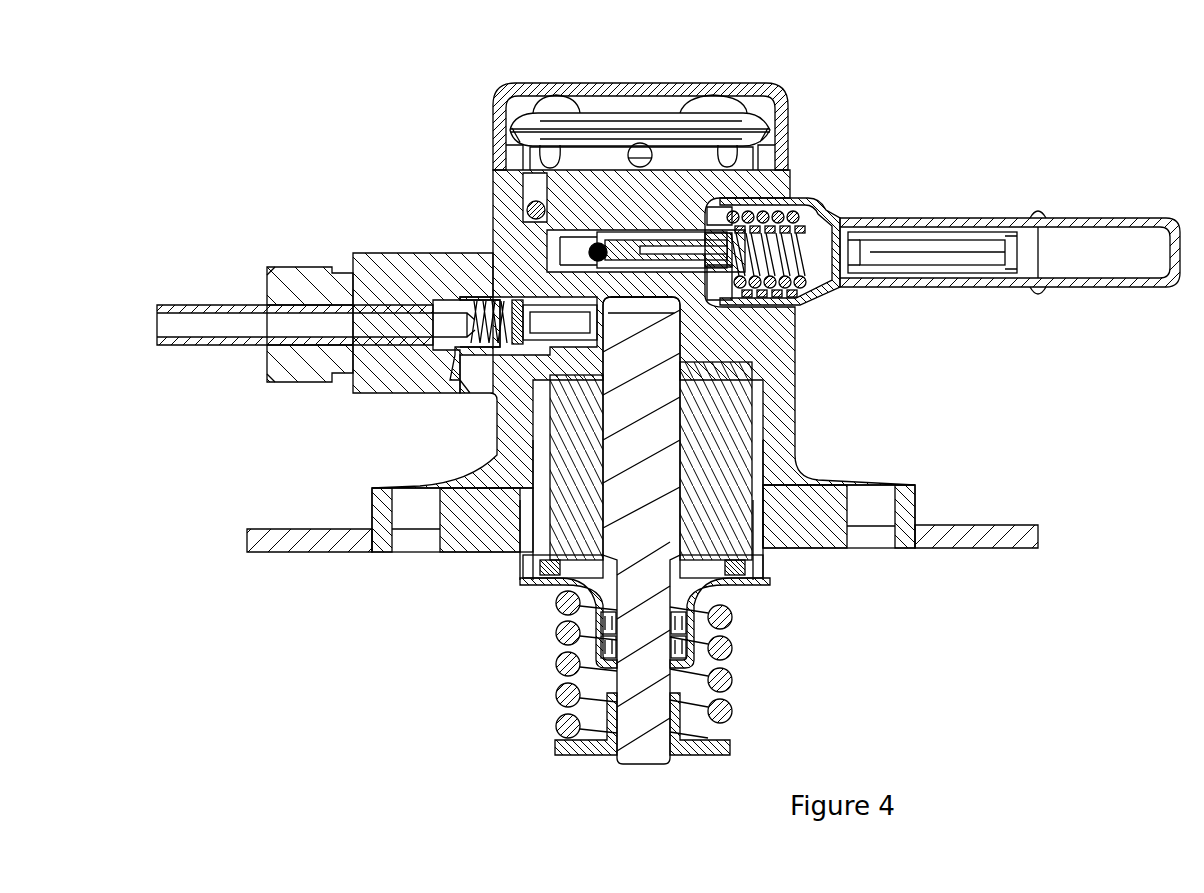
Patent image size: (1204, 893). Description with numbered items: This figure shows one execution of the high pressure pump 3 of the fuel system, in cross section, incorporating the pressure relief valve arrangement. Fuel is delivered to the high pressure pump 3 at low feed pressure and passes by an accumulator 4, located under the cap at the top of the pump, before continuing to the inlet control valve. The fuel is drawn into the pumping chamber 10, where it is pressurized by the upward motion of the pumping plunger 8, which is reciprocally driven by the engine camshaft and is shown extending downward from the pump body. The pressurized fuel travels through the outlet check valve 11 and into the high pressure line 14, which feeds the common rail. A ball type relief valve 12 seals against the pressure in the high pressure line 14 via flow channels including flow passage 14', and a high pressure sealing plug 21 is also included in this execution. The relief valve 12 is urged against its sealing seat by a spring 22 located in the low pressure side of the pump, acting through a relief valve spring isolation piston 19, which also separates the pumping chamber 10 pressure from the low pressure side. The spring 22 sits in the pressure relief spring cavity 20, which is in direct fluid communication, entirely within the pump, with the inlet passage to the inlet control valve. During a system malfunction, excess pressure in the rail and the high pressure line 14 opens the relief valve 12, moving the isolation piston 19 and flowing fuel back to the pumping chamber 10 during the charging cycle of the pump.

The high pressure pump 3 is at (459, 168).
The accumulator 4 is at (722, 118).
The pumping plunger 8 is at (672, 517).
The pumping chamber 10 is at (645, 305).
The outlet check valve 11 is at (520, 345).
The relief valve 12 is at (545, 222).
The high pressure line 14 is at (316, 268).
The flow passage 14' is at (461, 226).
The relief valve spring isolation piston 19 is at (693, 262).
The pressure relief spring cavity 20 is at (786, 216).
The high pressure sealing plug 21 is at (548, 203).
The spring 22 is at (787, 203).